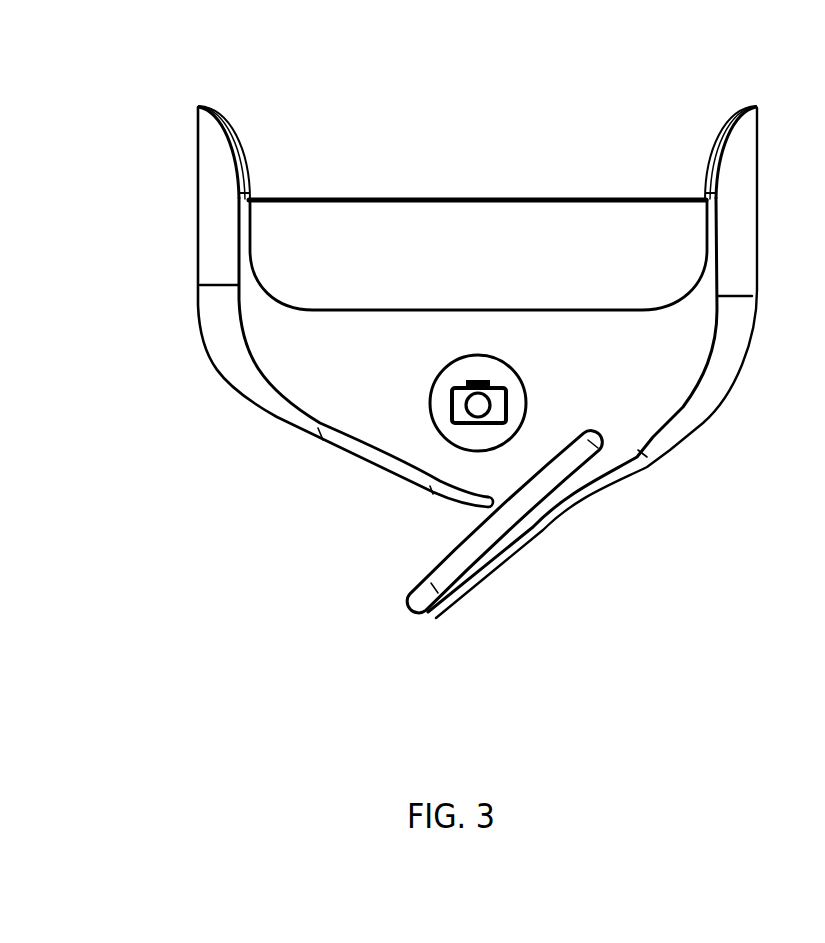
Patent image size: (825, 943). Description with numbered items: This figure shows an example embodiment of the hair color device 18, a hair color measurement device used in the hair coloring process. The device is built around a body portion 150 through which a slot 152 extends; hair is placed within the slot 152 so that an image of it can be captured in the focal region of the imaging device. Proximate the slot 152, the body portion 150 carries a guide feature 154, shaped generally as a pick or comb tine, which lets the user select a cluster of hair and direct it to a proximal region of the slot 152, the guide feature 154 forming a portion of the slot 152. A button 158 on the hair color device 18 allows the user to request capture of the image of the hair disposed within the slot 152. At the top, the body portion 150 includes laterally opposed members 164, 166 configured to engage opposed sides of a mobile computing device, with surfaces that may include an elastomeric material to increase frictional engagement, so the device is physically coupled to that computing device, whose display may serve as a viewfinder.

The hair color device 18 is at (133, 35).
The body portion 150 is at (238, 431).
The slot 152 is at (493, 511).
The guide feature 154 is at (457, 592).
The button 158 is at (430, 403).
The laterally opposed member 164 is at (718, 139).
The laterally opposed member 166 is at (237, 138).